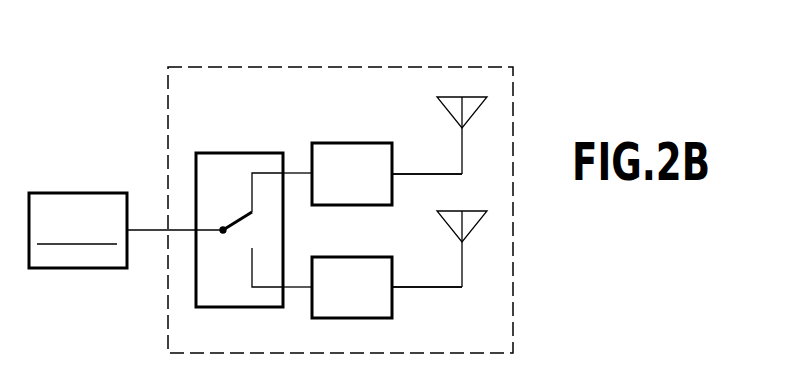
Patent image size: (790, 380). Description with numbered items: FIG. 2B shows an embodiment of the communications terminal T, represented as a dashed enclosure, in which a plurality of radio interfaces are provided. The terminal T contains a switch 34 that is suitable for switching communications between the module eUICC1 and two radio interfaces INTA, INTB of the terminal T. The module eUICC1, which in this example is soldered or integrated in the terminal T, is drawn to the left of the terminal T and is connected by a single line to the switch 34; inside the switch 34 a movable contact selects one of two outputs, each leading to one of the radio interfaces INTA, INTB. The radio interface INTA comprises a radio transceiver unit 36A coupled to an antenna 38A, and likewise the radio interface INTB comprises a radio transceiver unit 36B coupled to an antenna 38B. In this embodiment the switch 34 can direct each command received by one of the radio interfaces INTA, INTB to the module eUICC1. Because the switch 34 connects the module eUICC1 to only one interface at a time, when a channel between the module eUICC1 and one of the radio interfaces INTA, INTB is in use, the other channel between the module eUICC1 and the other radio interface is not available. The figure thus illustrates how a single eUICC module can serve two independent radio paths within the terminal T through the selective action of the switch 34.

The communications terminal T is at (376, 65).
The switch 34 is at (230, 152).
The radio transceiver unit 36A is at (375, 185).
The radio transceiver unit 36B is at (375, 300).
The antenna 38A is at (441, 169).
The antenna 38B is at (441, 284).
The radio interface INTA is at (402, 132).
The radio interface INTB is at (412, 301).
The eUICC module eUICC1 is at (78, 230).